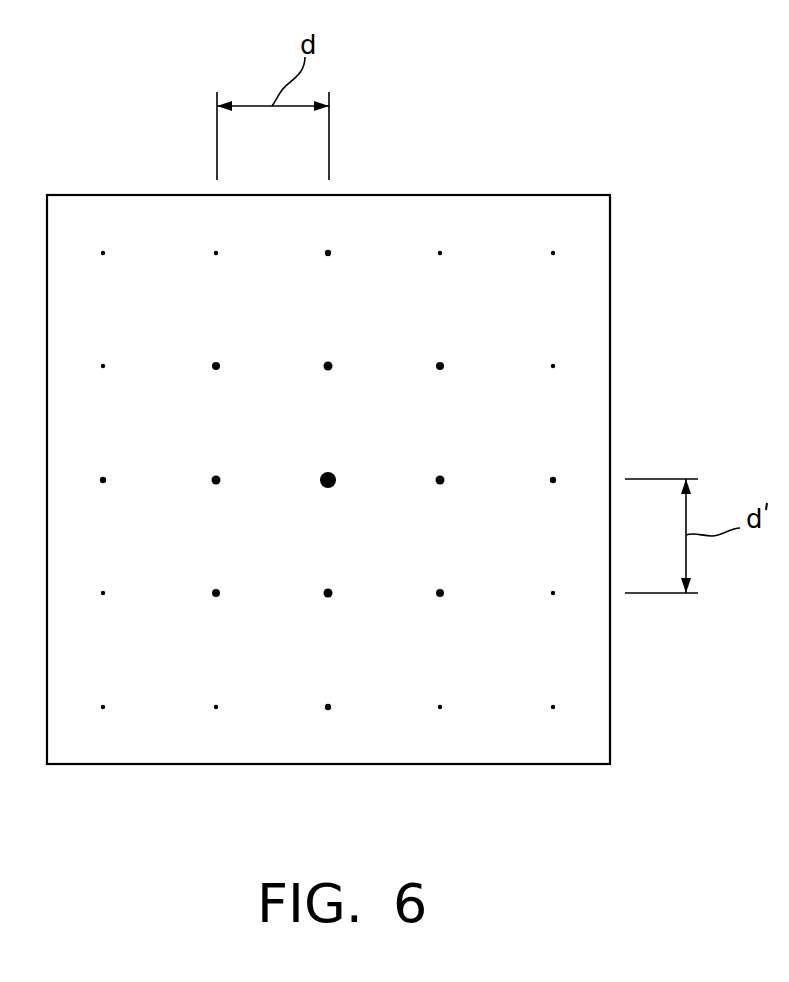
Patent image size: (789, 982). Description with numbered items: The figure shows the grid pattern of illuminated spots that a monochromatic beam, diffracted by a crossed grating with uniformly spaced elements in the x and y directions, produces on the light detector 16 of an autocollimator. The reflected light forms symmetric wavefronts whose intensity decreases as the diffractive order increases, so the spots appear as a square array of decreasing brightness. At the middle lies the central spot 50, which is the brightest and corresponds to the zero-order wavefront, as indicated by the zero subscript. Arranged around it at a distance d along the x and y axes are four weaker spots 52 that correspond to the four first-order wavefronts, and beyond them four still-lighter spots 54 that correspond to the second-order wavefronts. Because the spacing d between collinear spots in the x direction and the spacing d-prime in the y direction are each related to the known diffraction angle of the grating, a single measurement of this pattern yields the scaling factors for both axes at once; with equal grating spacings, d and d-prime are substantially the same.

The light detector 16 is at (610, 302).
The central spot 50 is at (330, 477).
The weaker spots 52 is at (330, 364).
The still-lighter spots 54 is at (330, 251).